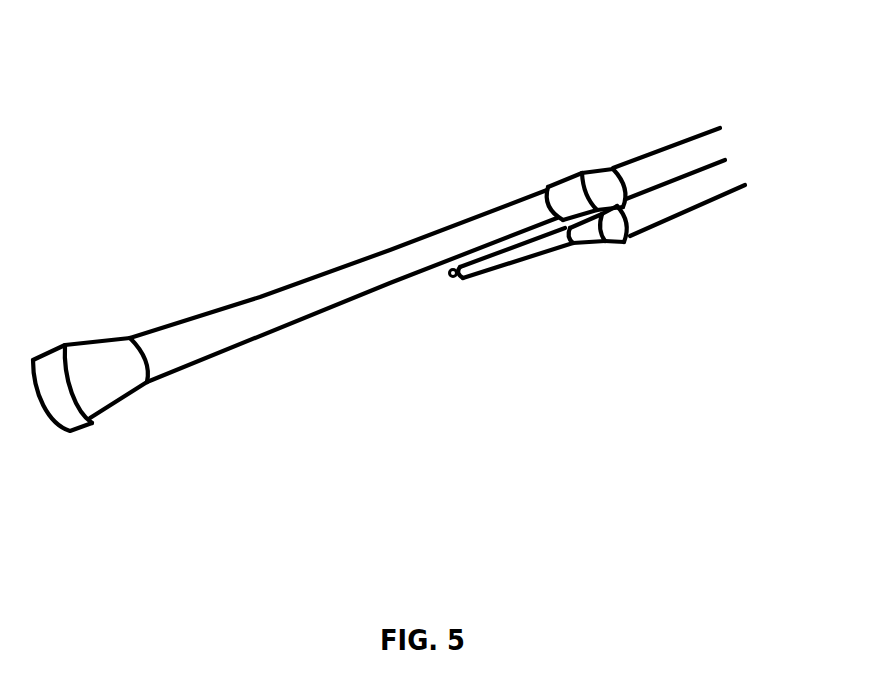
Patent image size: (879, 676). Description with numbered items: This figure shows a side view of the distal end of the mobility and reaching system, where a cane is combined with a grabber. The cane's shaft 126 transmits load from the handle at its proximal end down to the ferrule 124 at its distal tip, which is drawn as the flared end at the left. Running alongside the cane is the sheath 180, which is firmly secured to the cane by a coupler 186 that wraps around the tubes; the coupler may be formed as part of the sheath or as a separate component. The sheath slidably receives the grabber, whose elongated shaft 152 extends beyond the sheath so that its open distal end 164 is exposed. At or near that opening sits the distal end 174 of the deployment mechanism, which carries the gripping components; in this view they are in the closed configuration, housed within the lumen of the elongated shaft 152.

The ferrule 124 is at (108, 405).
The shaft 126 is at (377, 267).
The coupler 186 is at (600, 175).
The sheath 180 is at (708, 183).
The elongated shaft 152 is at (583, 235).
The distal end 164 is at (510, 265).
The distal end 174 is at (453, 278).